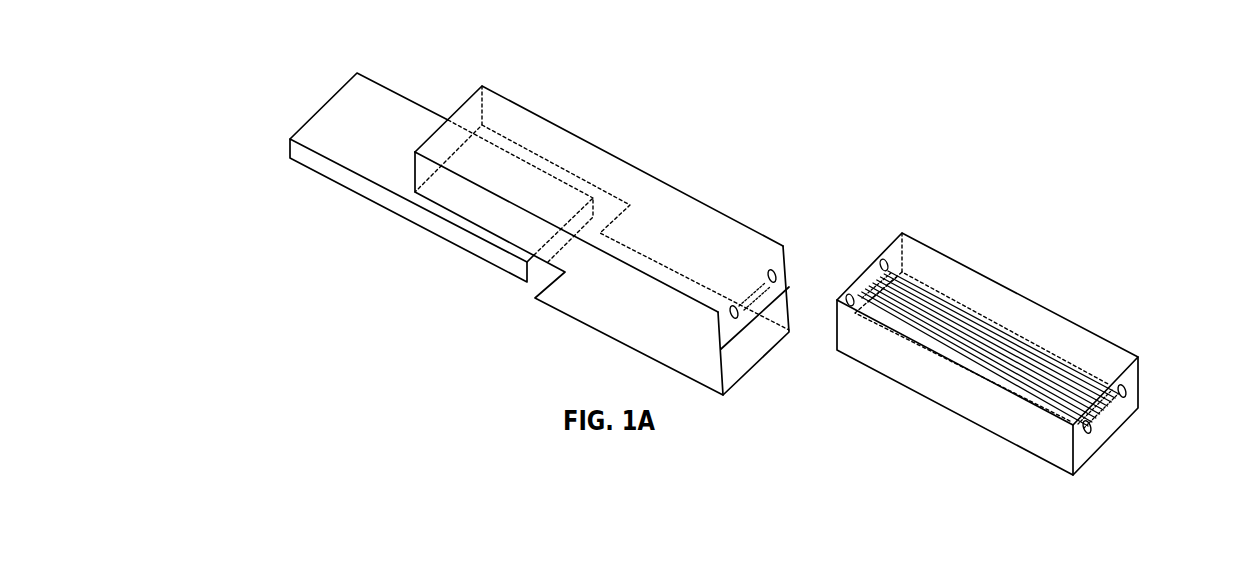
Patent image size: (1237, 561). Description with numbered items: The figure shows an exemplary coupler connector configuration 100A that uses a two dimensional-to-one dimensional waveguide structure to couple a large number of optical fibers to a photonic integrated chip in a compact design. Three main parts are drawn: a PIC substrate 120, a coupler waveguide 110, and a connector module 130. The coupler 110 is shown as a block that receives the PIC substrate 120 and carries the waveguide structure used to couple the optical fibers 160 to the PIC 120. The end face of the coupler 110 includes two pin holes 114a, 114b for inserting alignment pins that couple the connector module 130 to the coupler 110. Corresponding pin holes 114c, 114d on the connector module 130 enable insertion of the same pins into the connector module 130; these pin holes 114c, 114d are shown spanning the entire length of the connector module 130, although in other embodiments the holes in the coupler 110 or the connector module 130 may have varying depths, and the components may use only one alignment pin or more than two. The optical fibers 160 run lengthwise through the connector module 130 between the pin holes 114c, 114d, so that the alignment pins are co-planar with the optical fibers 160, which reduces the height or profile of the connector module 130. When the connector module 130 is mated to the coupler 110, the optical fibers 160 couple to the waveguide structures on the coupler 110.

The coupler connector configuration 100A is at (952, 93).
The coupler waveguide 110 is at (510, 101).
The PIC substrate 120 is at (303, 127).
The connector module 130 is at (958, 262).
The pin hole 114a is at (730, 315).
The pin hole 114b is at (775, 274).
The pin hole 114c is at (1083, 430).
The pin hole 114d is at (1124, 387).
The optical fibers 160 is at (1115, 415).